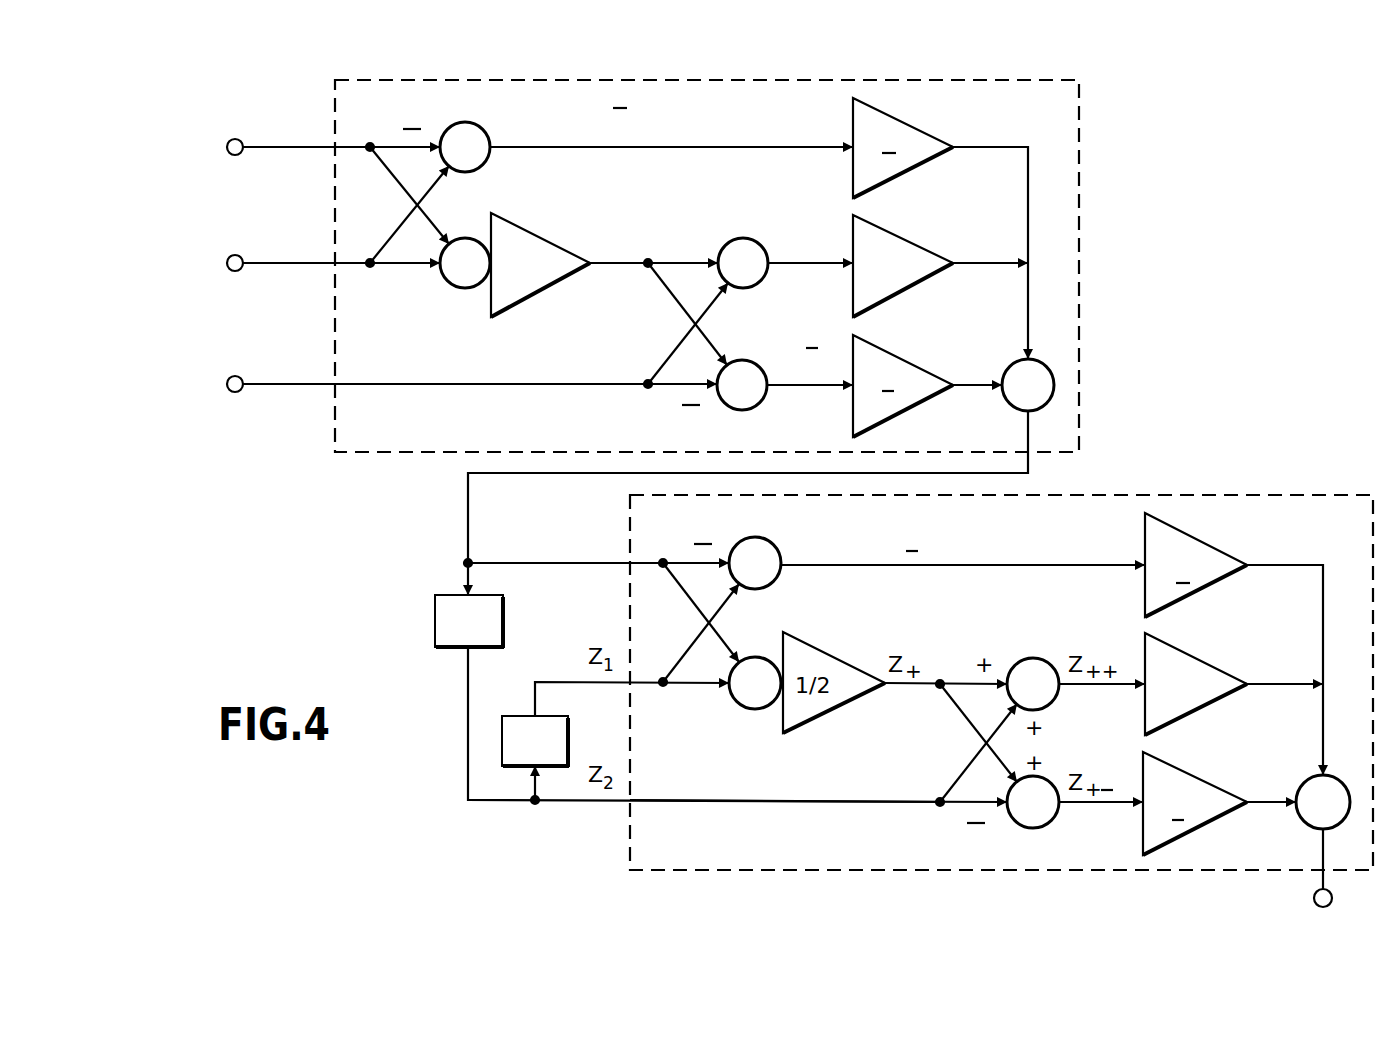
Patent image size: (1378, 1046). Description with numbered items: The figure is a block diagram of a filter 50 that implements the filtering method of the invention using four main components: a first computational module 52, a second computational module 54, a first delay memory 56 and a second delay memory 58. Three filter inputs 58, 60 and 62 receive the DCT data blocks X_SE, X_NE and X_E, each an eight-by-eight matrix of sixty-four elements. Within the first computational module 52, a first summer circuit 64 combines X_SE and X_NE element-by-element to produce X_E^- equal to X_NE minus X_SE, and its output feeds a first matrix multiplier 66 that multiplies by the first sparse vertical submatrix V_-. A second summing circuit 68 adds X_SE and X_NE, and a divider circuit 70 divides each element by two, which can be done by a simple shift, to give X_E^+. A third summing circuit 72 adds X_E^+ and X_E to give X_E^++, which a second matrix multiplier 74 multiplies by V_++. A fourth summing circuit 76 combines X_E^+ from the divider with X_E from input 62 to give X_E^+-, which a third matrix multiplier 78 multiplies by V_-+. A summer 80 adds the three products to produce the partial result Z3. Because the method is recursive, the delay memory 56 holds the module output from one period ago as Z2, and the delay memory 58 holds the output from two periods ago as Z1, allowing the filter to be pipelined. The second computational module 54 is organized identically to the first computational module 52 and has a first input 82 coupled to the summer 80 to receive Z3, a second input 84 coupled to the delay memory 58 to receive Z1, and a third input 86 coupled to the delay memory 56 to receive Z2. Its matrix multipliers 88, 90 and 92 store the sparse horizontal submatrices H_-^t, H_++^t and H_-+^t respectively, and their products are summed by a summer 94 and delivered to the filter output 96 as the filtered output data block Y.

The filter 50 is at (1195, 322).
The first computational module 52 is at (1079, 200).
The second computational module 54 is at (1157, 498).
The first delay memory 56 is at (435, 620).
The second delay memory 58 is at (227, 147).
The input 60 is at (227, 263).
The input 62 is at (227, 384).
The first summer circuit 64 is at (483, 130).
The first matrix multiplier 66 is at (1010, 133).
The second summing circuit 68 is at (465, 288).
The divider circuit 70 is at (556, 237).
The third summing circuit 72 is at (743, 238).
The second matrix multiplier 74 is at (1010, 250).
The fourth summing circuit 76 is at (755, 405).
The third matrix multiplier 78 is at (1010, 372).
The summer 80 is at (1012, 410).
The first input 82 is at (630, 563).
The second input 84 is at (630, 683).
The third input 86 is at (630, 800).
The matrix multiplier 88 is at (1175, 547).
The matrix multiplier 90 is at (1175, 667).
The matrix multiplier 92 is at (1175, 787).
The summer 94 is at (1308, 825).
The filter output 96 is at (1314, 898).